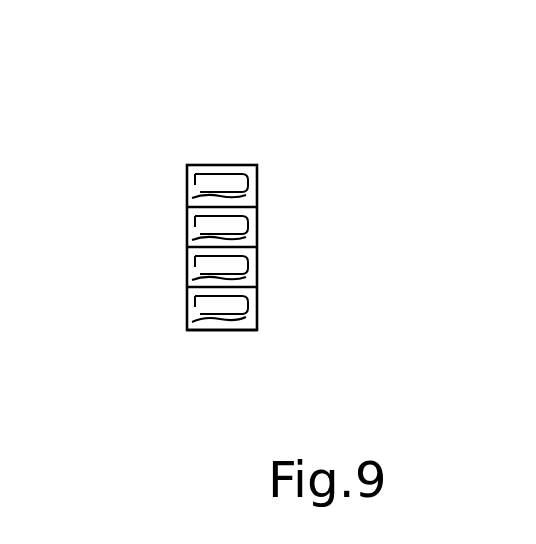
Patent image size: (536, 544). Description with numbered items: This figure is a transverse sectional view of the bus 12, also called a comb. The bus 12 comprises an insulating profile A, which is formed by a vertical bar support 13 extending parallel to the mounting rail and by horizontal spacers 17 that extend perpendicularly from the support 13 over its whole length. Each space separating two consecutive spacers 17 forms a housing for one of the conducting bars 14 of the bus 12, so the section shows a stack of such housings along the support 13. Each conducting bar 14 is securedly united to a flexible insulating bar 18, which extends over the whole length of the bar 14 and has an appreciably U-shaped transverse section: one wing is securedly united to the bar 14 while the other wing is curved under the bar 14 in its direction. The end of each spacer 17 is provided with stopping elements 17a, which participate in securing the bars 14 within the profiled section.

The stopping elements 17a is at (187, 208).
The insulating profile A is at (258, 205).
The bar support 13 is at (258, 222).
The spacers 17 is at (188, 213).
The bus 12 is at (257, 280).
The conducting bars 14 is at (187, 303).
The flexible insulating bar 18 is at (252, 310).